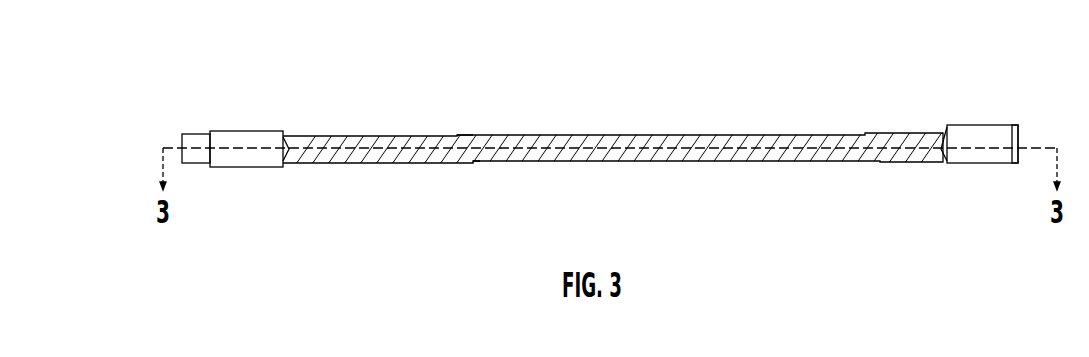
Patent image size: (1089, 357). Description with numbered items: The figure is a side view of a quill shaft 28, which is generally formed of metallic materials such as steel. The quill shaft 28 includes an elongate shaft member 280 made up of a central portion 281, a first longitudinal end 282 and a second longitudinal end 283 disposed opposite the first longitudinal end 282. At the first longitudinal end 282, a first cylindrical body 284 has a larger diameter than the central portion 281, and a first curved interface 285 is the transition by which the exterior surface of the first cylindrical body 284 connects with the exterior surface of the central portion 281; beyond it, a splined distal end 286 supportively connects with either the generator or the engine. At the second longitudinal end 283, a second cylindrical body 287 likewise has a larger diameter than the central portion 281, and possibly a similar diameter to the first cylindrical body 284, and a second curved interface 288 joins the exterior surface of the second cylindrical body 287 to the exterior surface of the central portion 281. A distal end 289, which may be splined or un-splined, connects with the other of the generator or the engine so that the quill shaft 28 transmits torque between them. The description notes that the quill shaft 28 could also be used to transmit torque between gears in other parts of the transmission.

The quill shaft 28 is at (373, 132).
The elongate shaft member 280 is at (328, 163).
The central portion 281 is at (552, 162).
The first longitudinal end 282 is at (221, 137).
The second longitudinal end 283 is at (1004, 132).
The first cylindrical body 284 is at (233, 142).
The first curved interface 285 is at (284, 135).
The splined distal end 286 is at (193, 142).
The second cylindrical body 287 is at (985, 137).
The second curved interface 288 is at (943, 130).
The distal end 289 is at (1010, 137).